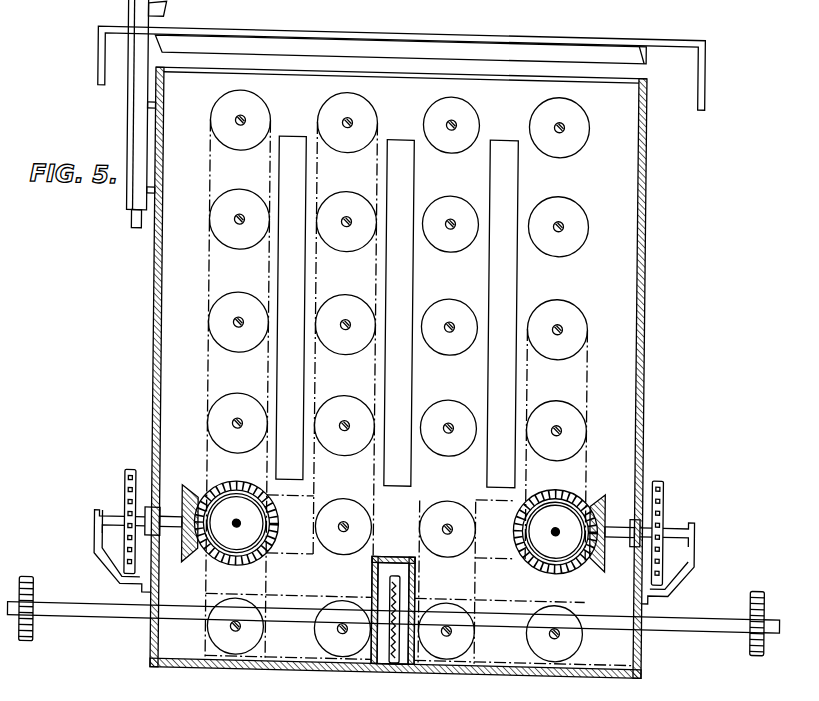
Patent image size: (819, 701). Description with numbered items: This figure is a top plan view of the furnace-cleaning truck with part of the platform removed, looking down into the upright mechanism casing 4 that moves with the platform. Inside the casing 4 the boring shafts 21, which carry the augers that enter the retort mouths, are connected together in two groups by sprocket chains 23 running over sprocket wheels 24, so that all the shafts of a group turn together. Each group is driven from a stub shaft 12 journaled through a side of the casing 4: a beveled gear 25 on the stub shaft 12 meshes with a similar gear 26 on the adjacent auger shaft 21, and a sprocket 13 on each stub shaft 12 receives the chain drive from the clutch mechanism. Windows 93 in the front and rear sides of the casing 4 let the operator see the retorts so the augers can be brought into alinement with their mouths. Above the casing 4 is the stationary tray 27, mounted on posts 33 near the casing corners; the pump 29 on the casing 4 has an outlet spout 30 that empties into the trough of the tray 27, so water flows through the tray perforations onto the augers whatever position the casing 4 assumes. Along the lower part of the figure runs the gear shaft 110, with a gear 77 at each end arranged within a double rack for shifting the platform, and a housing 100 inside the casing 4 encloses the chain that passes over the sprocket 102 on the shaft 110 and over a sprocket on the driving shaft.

The mechanism casing 4 is at (153, 328).
The stub shaft 12 is at (171, 526).
The sprocket 13 is at (126, 486).
The boring shaft 21 is at (449, 331).
The sprocket chain 23 is at (306, 559).
The sprocket wheel 24 is at (330, 499).
The beveled gear 25 is at (611, 464).
The gear 26 is at (515, 529).
The tray 27 is at (612, 52).
The pump 29 is at (138, 117).
The outlet spout 30 is at (164, 13).
The post 33 is at (698, 75).
The gear 77 is at (29, 587).
The window 93 is at (397, 312).
The housing 100 is at (396, 549).
The sprocket 102 is at (383, 665).
The gear shaft 110 is at (487, 618).